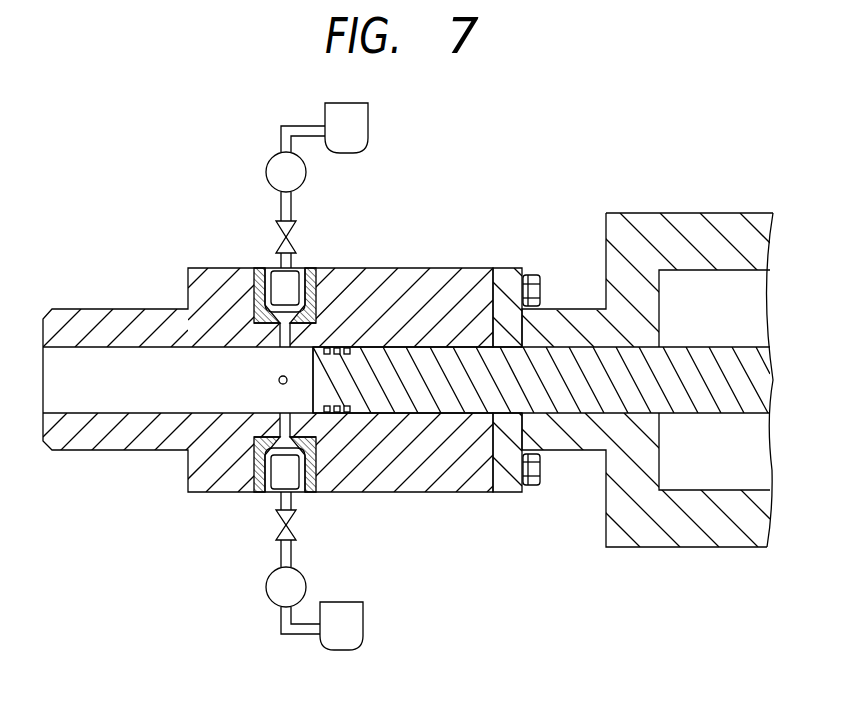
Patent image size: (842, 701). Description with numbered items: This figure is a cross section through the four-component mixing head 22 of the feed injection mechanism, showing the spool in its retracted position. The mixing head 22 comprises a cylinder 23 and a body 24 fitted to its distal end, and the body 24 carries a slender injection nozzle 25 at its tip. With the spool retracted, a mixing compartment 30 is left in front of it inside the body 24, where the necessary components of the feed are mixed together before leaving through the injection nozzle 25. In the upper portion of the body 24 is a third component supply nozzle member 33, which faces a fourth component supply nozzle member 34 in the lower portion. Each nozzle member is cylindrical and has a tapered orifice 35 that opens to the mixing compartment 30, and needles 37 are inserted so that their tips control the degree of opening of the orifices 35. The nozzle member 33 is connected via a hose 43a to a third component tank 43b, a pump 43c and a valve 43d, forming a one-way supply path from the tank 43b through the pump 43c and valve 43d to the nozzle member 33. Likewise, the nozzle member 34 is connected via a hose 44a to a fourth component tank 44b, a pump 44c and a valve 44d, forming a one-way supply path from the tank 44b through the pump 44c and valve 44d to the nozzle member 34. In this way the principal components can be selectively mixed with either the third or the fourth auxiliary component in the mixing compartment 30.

The four-component mixing head 22 is at (184, 255).
The cylinder 23 is at (687, 222).
The body 24 is at (450, 277).
The injection nozzle 25 is at (93, 318).
The mixing compartment 30 is at (257, 393).
The third component supply nozzle member 33 is at (258, 268).
The fourth component supply nozzle member 34 is at (256, 492).
The tapered orifice 35 is at (279, 378).
The needle 37 is at (300, 268).
The hose 43a is at (281, 138).
The third component tank 43b is at (362, 126).
The pump 43c is at (306, 172).
The valve 43d is at (296, 228).
The hose 44a is at (281, 629).
The fourth component tank 44b is at (363, 617).
The pump 44c is at (304, 581).
The valve 44d is at (296, 528).